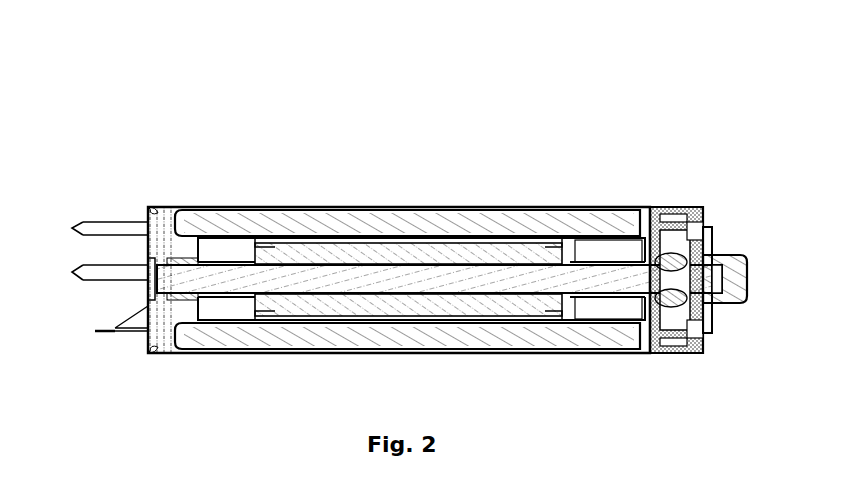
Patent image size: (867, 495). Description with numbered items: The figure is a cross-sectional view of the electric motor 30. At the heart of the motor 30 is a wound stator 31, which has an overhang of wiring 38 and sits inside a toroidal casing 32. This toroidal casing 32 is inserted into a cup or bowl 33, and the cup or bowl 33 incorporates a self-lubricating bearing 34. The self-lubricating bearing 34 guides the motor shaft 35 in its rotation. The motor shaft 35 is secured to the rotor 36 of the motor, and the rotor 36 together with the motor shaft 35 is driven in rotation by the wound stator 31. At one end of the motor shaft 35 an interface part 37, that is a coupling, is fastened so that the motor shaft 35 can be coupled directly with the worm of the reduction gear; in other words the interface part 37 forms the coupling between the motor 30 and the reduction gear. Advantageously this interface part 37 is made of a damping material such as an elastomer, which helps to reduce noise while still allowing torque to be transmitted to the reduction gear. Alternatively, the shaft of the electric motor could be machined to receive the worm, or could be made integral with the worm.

The electric motor 30 is at (503, 110).
The wound stator 31 is at (425, 336).
The toroidal casing 32 is at (640, 350).
The cup or bowl 33 is at (688, 222).
The self-lubricating bearing 34 is at (660, 247).
The motor shaft 35 is at (487, 277).
The rotor 36 is at (355, 248).
The interface part 37 is at (737, 300).
The overhang of wiring 38 is at (590, 338).